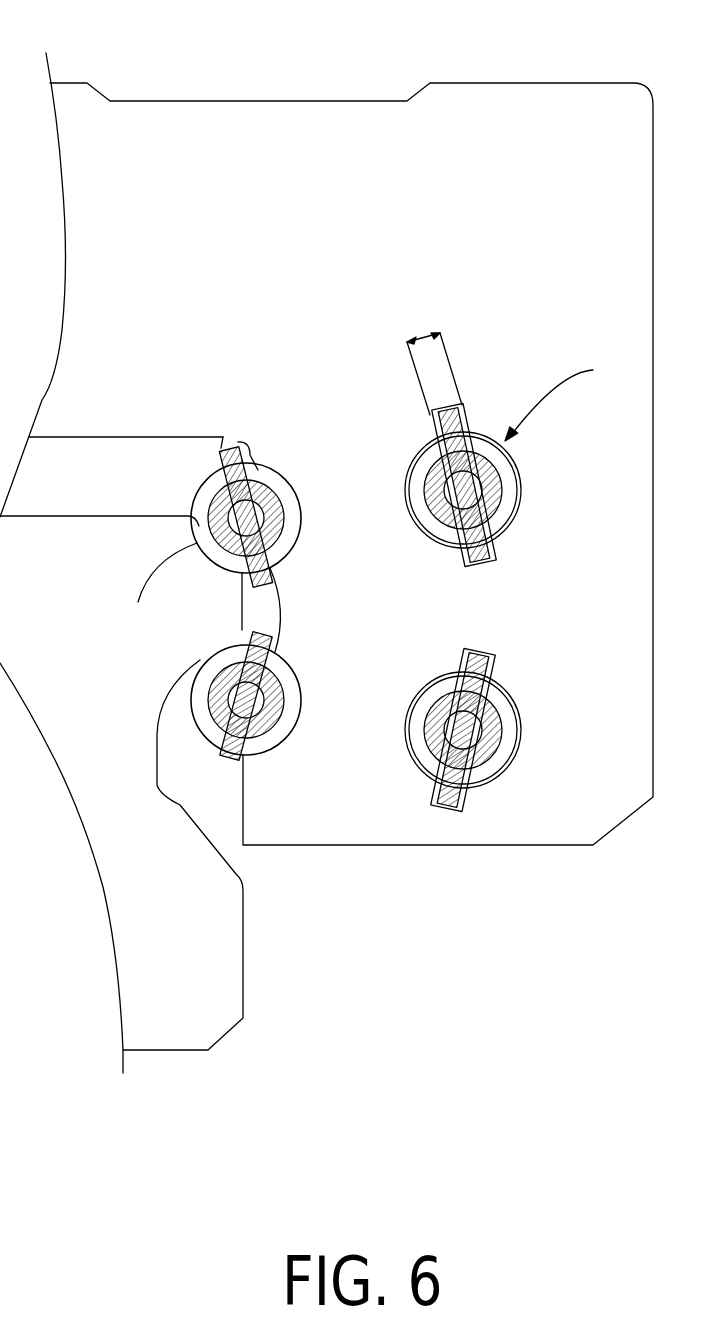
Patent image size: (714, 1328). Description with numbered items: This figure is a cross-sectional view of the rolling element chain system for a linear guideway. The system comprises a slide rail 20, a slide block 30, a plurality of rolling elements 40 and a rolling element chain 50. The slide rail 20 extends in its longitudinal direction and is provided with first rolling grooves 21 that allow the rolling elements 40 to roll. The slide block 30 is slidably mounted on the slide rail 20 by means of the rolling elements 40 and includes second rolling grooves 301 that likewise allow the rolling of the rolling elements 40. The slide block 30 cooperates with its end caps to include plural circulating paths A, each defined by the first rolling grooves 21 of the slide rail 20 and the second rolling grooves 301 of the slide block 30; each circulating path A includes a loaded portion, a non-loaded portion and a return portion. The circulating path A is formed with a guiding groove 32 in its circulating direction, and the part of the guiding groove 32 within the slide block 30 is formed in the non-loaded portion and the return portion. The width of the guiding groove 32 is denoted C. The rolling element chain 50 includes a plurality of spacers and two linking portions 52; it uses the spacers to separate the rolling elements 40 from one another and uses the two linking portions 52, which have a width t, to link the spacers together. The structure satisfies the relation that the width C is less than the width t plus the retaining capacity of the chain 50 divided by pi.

The slide rail 20 is at (223, 930).
The first rolling grooves 21 is at (203, 660).
The slide block 30 is at (522, 113).
The second rolling grooves 301 is at (302, 523).
The guiding groove 32 is at (465, 418).
The rolling elements 40 is at (506, 510).
The rolling element chain 50 is at (262, 482).
The linking portions 52 is at (230, 443).
The circulating path A is at (559, 397).
The width of the guiding groove C is at (434, 357).